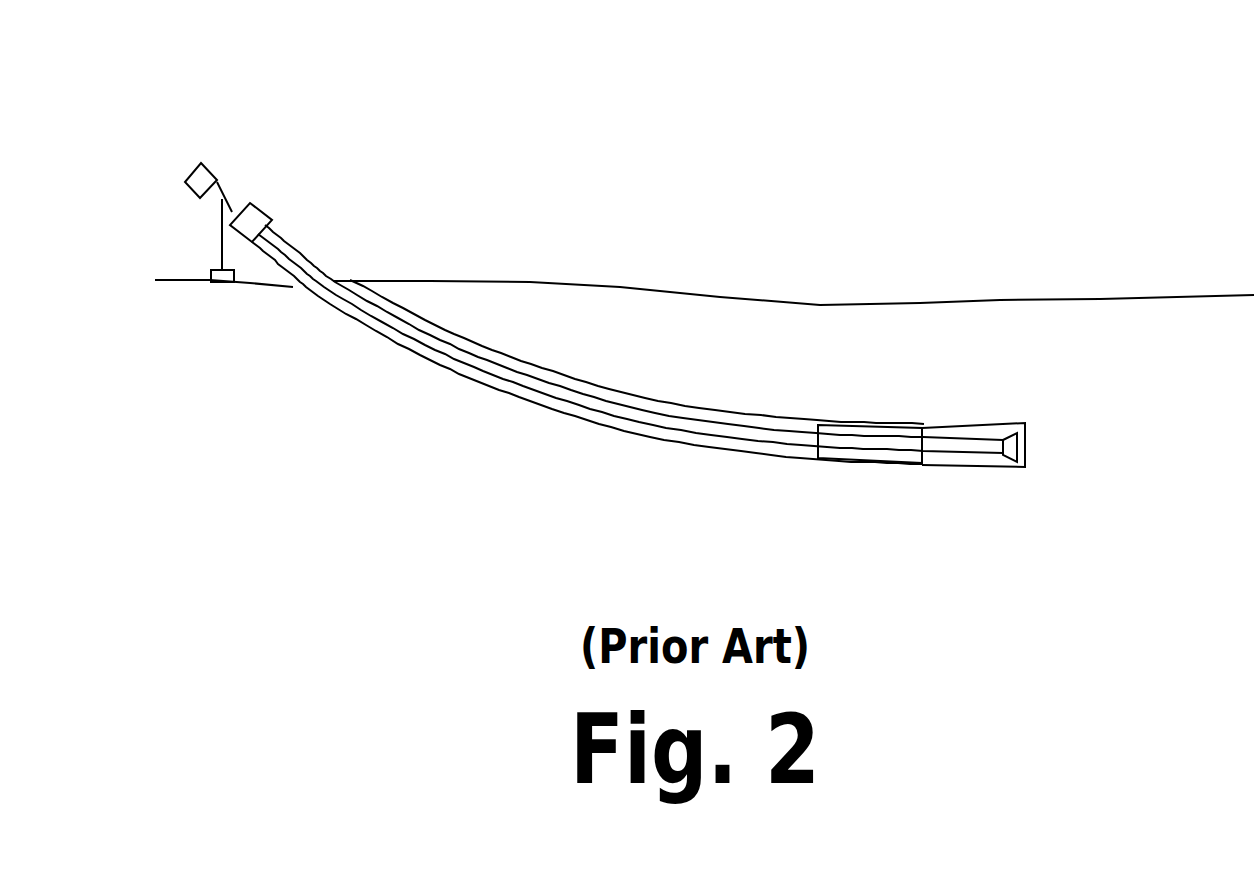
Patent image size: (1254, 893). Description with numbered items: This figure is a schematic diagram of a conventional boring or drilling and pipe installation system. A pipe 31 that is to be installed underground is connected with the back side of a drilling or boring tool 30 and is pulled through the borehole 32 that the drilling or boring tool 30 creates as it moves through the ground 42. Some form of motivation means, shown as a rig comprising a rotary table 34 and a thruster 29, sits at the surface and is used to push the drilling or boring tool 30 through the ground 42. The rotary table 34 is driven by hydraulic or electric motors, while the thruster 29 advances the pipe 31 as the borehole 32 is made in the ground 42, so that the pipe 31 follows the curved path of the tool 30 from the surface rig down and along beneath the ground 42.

The thruster 29 is at (209, 166).
The rotary table 34 is at (260, 204).
The ground 42 is at (705, 340).
The pipe 31 is at (590, 403).
The borehole 32 is at (952, 430).
The drilling or boring tool 30 is at (1010, 458).